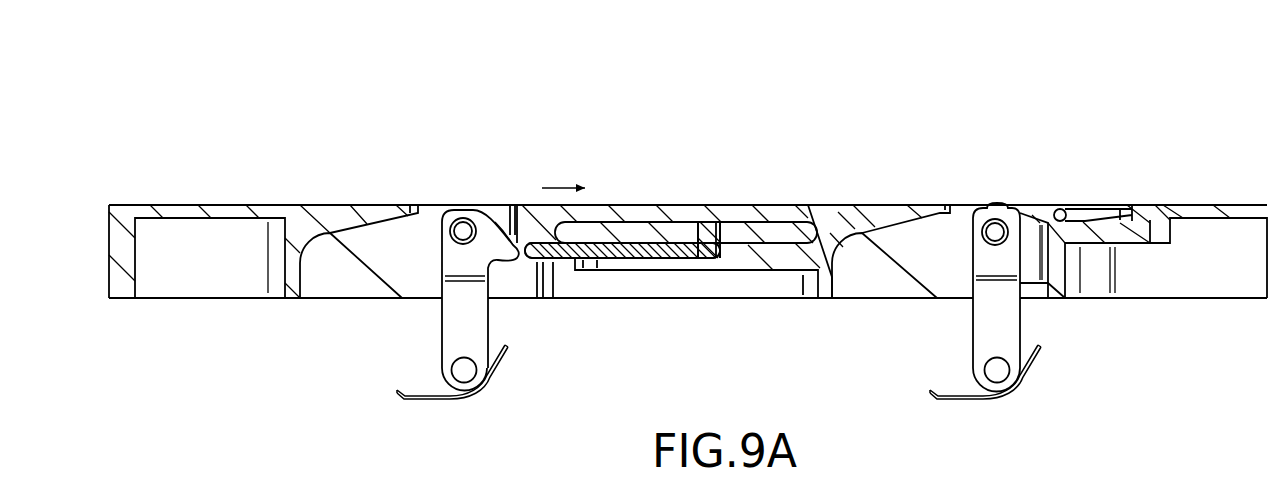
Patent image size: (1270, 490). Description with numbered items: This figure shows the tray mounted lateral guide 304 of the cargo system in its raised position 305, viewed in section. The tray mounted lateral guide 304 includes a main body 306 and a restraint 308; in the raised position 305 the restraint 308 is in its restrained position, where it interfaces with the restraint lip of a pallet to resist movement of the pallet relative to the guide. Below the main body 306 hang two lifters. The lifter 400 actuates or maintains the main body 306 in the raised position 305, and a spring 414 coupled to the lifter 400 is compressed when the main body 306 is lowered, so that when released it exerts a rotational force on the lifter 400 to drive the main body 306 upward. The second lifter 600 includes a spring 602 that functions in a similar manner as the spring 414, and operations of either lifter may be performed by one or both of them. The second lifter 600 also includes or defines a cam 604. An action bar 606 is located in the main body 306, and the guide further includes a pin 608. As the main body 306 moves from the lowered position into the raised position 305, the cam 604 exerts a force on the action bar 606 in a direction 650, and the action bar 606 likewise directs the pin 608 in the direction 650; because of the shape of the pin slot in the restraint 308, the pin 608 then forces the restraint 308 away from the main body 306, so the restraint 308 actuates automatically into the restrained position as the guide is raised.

The tray mounted lateral guide 304 is at (1143, 74).
The raised position 305 is at (1220, 74).
The main body 306 is at (840, 213).
The restraint 308 is at (634, 226).
The lifter 400 is at (1012, 322).
The spring 414 is at (1025, 378).
The second lifter 600 is at (482, 322).
The spring 602 is at (487, 392).
The cam 604 is at (517, 250).
The action bar 606 is at (663, 250).
The pin 608 is at (706, 222).
The direction 650 is at (555, 187).